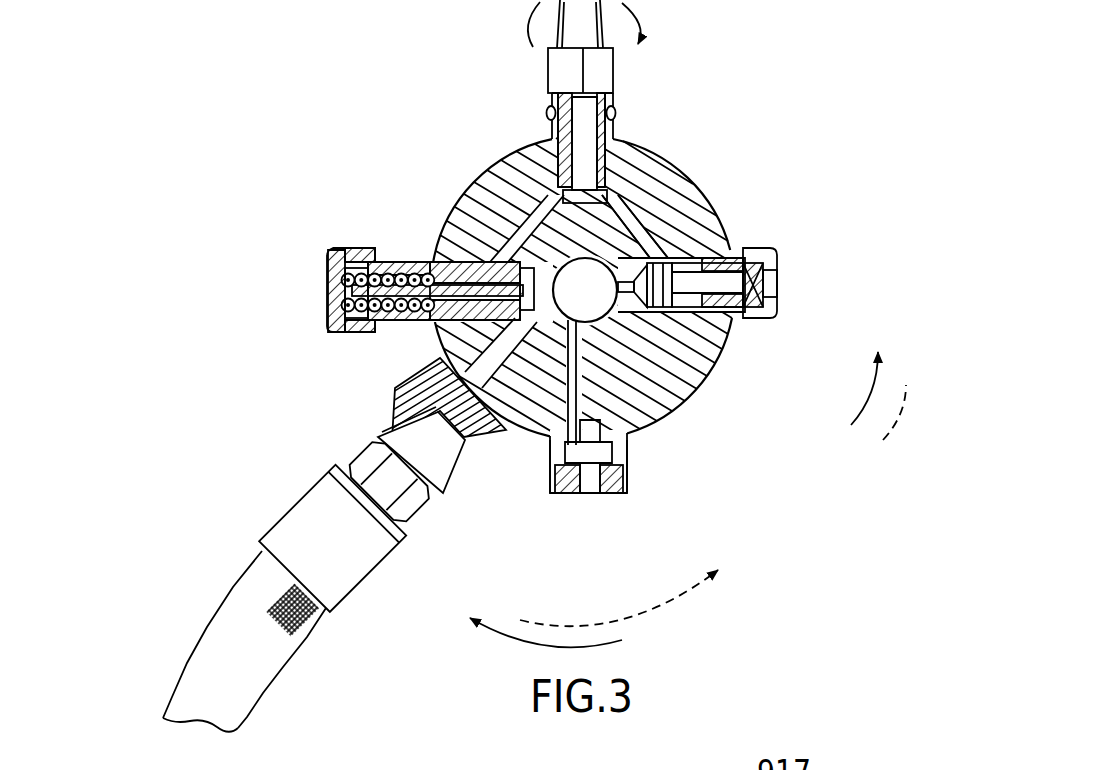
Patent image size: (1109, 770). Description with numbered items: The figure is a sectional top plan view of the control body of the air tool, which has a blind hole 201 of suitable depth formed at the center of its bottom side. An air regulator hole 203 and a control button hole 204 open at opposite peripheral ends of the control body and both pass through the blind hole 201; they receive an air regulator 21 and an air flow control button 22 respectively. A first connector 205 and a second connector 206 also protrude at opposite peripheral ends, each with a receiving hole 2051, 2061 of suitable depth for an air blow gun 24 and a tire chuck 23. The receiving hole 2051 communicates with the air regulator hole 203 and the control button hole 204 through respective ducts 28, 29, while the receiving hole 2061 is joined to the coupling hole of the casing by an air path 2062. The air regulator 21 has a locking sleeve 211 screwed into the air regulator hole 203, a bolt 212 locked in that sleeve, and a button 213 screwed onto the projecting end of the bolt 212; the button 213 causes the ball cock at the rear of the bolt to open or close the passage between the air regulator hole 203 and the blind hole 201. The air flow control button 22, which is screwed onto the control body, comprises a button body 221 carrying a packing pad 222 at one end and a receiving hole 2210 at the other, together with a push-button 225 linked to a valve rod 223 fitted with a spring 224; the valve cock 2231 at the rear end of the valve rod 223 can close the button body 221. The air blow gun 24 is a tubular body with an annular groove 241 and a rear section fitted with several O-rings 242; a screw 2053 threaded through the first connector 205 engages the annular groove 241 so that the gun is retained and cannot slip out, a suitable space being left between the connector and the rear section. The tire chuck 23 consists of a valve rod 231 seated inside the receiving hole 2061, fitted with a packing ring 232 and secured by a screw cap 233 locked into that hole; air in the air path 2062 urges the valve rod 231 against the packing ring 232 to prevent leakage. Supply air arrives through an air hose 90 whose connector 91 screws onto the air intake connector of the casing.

The blind hole 201 is at (640, 388).
The air regulator hole 203 is at (720, 332).
The control button hole 204 is at (435, 372).
The first connector 205 is at (615, 122).
The receiving hole 2051 is at (607, 170).
The screw 2053 is at (550, 112).
The second connector 206 is at (557, 462).
The receiving hole 2061 is at (551, 455).
The air path 2062 is at (627, 440).
The air regulator 21 is at (782, 257).
The locking sleeve 211 is at (740, 250).
The bolt 212 is at (777, 320).
The button 213 is at (775, 302).
The air flow control button 22 is at (407, 260).
The button body 221 is at (437, 262).
The packing pad 222 is at (462, 262).
The valve cock 2231 is at (527, 317).
The valve rod 223 is at (365, 250).
The spring 224 is at (345, 248).
The push-button 225 is at (320, 267).
The receiving hole 2210 is at (377, 263).
The tire chuck 23 is at (634, 494).
The valve rod 231 is at (593, 487).
The packing ring 232 is at (628, 466).
The screw cap 233 is at (568, 497).
The air blow gun 24 is at (605, 72).
The annular groove 241 is at (613, 110).
The O-rings 242 is at (612, 145).
The duct 28 is at (548, 258).
The duct 29 is at (670, 235).
The air hose 90 is at (265, 650).
The connector 91 is at (376, 557).